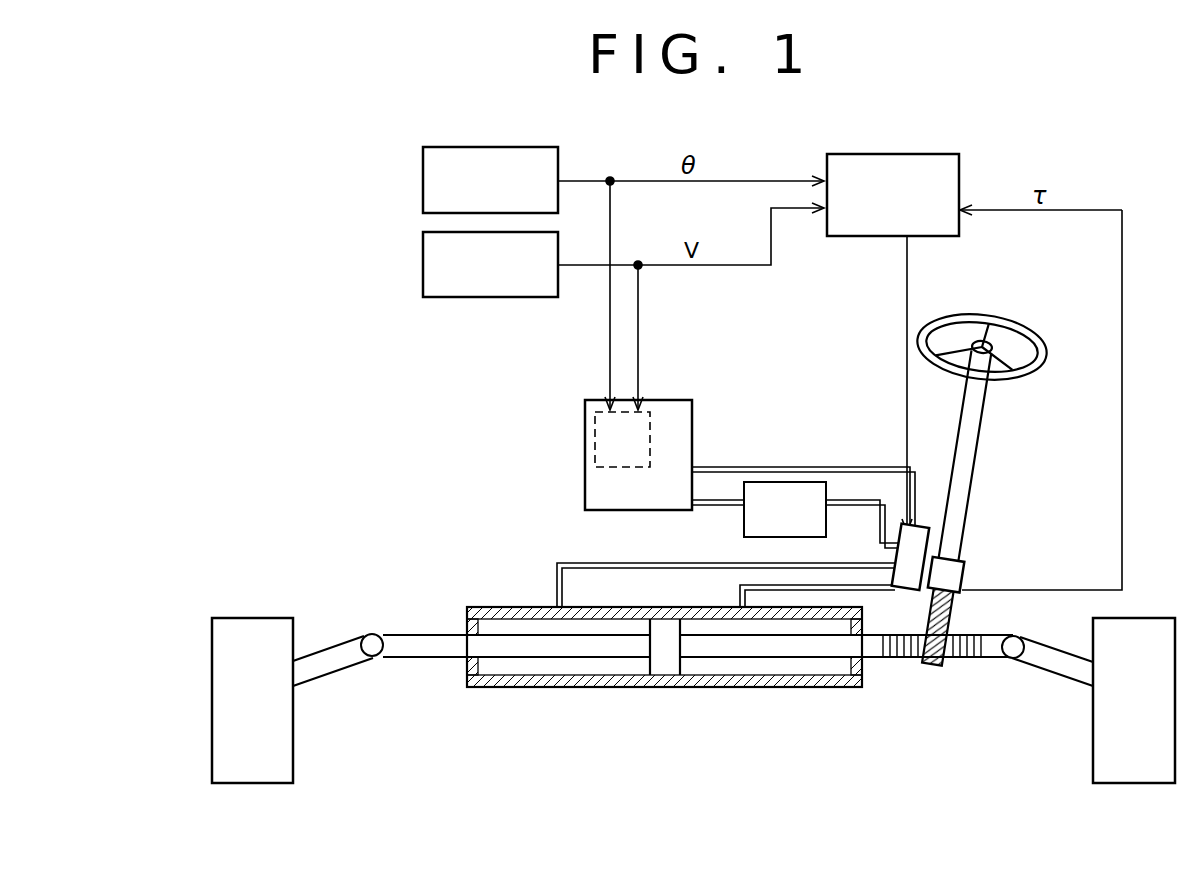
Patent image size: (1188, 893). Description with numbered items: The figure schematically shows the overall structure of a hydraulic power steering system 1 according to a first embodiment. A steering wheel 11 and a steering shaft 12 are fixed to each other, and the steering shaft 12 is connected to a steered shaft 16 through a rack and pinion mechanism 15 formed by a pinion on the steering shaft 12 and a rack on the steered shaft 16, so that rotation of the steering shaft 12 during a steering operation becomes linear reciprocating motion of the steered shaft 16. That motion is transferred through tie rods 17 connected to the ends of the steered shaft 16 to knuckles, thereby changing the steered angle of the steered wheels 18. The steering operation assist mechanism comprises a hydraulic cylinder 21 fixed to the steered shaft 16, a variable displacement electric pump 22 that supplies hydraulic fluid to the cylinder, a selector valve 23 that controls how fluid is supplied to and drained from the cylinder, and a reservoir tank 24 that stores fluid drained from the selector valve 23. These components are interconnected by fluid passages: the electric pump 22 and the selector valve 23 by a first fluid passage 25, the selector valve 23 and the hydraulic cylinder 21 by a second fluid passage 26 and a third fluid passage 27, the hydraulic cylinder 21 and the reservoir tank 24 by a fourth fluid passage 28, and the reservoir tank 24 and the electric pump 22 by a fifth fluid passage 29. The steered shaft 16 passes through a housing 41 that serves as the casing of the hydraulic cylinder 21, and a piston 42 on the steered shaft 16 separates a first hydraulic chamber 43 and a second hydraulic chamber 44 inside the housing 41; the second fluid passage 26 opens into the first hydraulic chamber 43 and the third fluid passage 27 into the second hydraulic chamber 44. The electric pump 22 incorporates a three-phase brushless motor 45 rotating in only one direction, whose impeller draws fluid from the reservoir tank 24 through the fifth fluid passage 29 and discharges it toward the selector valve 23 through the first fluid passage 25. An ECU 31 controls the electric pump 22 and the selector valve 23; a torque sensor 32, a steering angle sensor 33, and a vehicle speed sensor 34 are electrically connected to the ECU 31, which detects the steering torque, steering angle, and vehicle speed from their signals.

The hydraulic power steering system 1 is at (283, 131).
The steering wheel 11 is at (1018, 323).
The steering shaft 12 is at (975, 470).
The rack and pinion mechanism 15 is at (698, 700).
The steered shaft 16 is at (882, 660).
The tie rod 17 is at (331, 676).
The steered wheel 18 is at (248, 784).
The hydraulic cylinder 21 is at (664, 689).
The variable displacement electric pump 22 is at (585, 478).
The selector valve 23 is at (928, 532).
The reservoir tank 24 is at (785, 538).
The first fluid passage 25 is at (808, 464).
The second fluid passage 26 is at (740, 590).
The third fluid passage 27 is at (557, 577).
The fourth fluid passage 28 is at (876, 541).
The fifth fluid passage 29 is at (713, 507).
The ECU 31 is at (893, 154).
The torque sensor 32 is at (962, 592).
The steering angle sensor 33 is at (423, 181).
The vehicle speed sensor 34 is at (423, 265).
The housing 41 is at (605, 687).
The piston 42 is at (658, 687).
The first hydraulic chamber 43 is at (765, 687).
The second hydraulic chamber 44 is at (542, 687).
The motor 45 is at (595, 420).